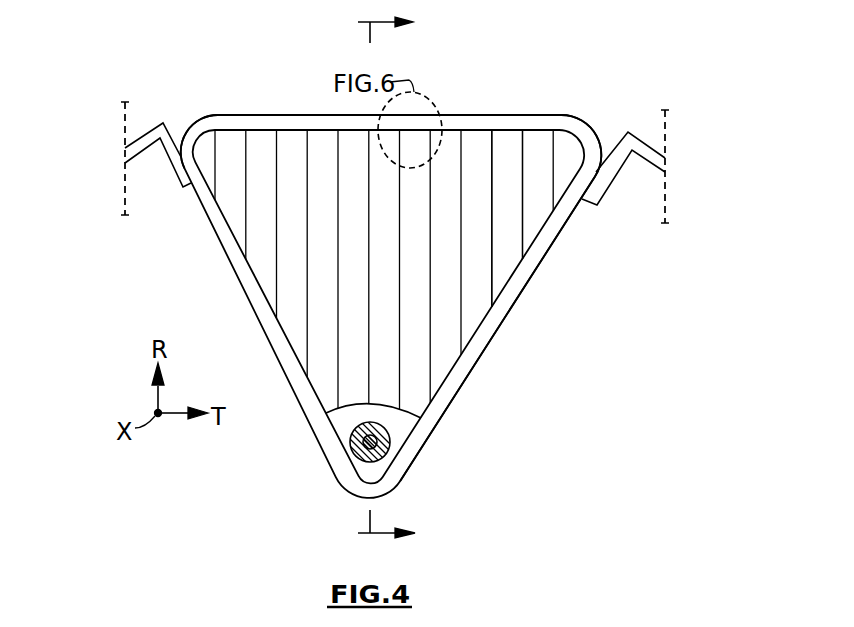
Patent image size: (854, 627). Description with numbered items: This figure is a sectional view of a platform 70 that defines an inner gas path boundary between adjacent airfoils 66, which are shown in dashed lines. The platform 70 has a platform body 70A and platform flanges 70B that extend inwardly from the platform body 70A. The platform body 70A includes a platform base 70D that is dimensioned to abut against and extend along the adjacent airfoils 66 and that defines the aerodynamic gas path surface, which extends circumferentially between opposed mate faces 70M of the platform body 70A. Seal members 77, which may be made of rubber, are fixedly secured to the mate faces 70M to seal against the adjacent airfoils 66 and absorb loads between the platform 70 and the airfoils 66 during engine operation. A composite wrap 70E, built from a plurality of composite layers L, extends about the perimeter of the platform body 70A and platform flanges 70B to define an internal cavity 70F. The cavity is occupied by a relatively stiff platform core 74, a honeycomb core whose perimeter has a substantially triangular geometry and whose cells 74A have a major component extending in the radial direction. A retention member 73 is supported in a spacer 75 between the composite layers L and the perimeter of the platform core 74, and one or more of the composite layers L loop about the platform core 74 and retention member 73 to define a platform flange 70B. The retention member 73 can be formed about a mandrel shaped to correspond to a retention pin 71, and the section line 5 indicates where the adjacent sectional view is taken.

The platform 70 is at (137, 84).
The mate face 70M is at (181, 157).
The platform base 70D is at (258, 114).
The composite wrap 70E is at (313, 125).
The internal cavity 70F is at (529, 133).
The platform body 70A is at (570, 222).
The platform flange 70B is at (491, 340).
The composite layer L is at (515, 123).
The platform core 74 is at (453, 130).
The cell 74A is at (483, 292).
The airfoil 66 is at (128, 186).
The seal member 77 is at (125, 125).
The spacer 75 is at (397, 425).
The retention member 73 is at (387, 458).
The retention pin 71 is at (362, 446).
The section line 5- 5 is at (378, 277).